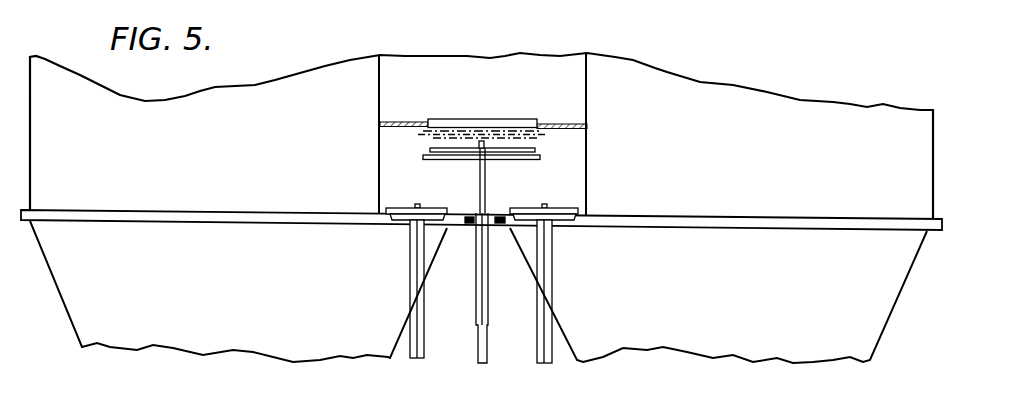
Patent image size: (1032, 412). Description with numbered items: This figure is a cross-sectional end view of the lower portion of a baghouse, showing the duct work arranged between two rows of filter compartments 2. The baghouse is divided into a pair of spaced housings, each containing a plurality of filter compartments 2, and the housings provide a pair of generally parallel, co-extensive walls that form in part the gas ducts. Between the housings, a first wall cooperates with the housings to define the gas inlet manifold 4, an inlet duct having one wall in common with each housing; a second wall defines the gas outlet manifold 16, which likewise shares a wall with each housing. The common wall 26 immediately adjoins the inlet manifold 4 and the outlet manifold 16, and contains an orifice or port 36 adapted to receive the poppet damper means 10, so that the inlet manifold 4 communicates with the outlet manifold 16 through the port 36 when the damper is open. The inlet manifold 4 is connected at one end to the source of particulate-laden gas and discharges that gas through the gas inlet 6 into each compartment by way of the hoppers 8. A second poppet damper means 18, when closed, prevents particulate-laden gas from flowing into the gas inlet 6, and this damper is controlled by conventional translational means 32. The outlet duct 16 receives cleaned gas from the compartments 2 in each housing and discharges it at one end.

The filter compartments 2 is at (233, 134).
The gas inlet manifold 4 is at (542, 188).
The gas inlet 6 is at (437, 226).
The hoppers 8 is at (239, 298).
The poppet damper means 10 is at (438, 161).
The gas outlet manifold 16 is at (497, 92).
The poppet damper means 18 is at (428, 206).
The common wall 26 is at (400, 129).
The translational means 32 is at (488, 274).
The orifice or port 36 is at (530, 119).